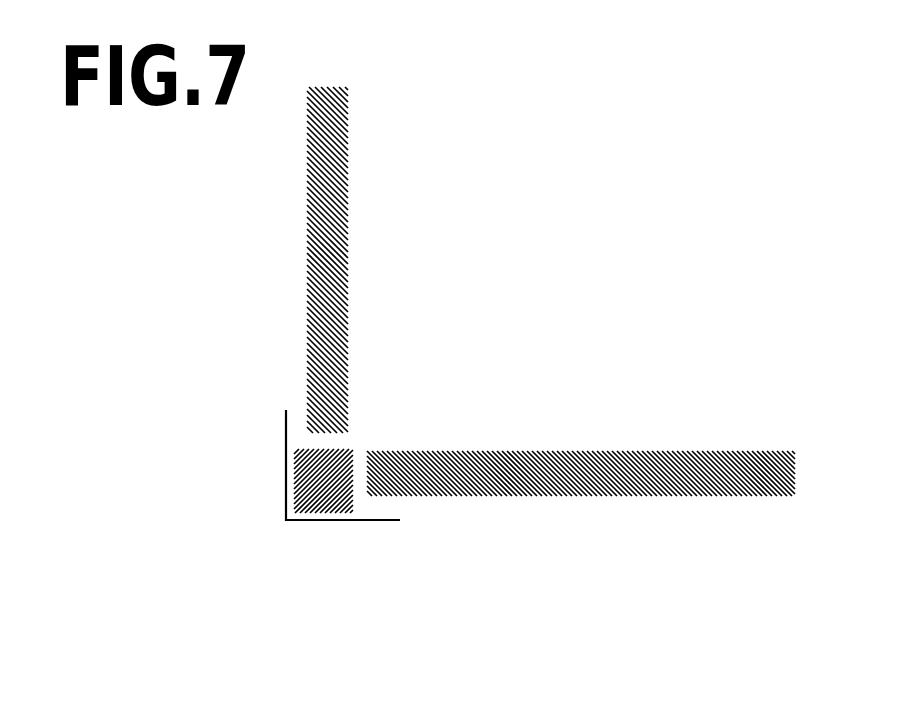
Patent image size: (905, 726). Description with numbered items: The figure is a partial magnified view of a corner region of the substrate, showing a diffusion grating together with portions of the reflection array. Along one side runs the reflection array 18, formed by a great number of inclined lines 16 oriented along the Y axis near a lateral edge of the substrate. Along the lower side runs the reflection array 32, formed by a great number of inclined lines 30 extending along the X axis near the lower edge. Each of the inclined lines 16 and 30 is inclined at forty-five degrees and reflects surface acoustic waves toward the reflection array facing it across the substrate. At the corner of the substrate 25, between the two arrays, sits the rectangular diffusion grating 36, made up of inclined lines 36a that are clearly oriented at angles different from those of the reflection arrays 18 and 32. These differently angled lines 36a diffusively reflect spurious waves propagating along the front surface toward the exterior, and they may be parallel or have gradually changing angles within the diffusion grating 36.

The inclined lines 16 is at (337, 235).
The reflection array 18 is at (384, 260).
The corner of the substrate 25 is at (285, 470).
The inclined lines 30 is at (714, 468).
The reflection array 32 is at (581, 425).
The diffusion grating 36 is at (301, 524).
The inclined lines 36a is at (343, 497).